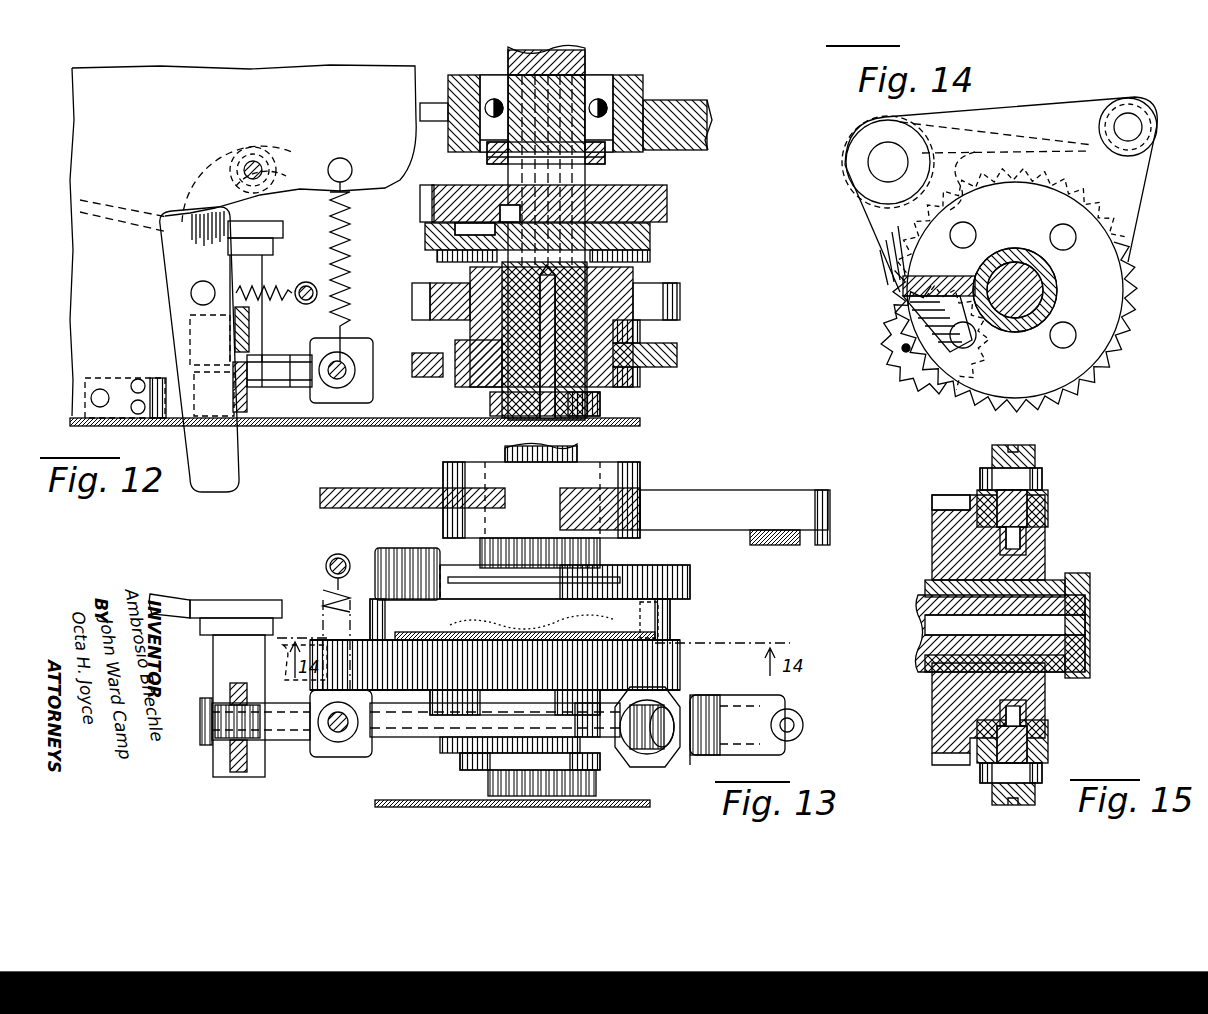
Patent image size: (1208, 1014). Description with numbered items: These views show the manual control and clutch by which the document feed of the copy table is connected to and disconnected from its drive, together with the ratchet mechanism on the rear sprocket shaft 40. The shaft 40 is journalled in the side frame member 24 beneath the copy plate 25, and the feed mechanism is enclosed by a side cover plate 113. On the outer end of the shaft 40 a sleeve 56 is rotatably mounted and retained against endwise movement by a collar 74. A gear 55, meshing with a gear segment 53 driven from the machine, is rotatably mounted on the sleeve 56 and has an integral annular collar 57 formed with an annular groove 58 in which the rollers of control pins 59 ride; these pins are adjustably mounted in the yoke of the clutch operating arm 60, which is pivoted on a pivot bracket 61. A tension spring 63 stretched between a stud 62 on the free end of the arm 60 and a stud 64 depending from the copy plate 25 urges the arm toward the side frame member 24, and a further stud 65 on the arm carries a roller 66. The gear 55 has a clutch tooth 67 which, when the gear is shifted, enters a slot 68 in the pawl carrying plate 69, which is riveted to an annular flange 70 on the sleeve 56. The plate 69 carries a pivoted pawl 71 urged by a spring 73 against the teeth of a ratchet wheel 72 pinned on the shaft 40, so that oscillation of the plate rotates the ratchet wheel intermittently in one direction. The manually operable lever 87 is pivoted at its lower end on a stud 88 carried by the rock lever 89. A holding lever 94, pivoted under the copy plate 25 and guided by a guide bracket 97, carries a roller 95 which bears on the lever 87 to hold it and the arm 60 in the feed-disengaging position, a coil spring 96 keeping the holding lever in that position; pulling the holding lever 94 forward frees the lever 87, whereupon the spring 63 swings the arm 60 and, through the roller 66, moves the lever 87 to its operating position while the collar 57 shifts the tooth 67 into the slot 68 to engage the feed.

In FIG. 12, the side frame member 24 is at (665, 112).
In FIG. 13, the side frame member 24 is at (398, 490).
In FIG. 12, the copy plate 25 is at (246, 75).
In FIG. 12, the sprocket shaft 40 is at (582, 60).
In FIG. 13, the sprocket shaft 40 is at (580, 450).
In FIG. 14, the sprocket shaft 40 is at (1008, 268).
In FIG. 15, the sprocket shaft 40 is at (920, 640).
In FIG. 13, the gear segment 53 is at (285, 654).
In FIG. 12, the gear 55 is at (680, 288).
In FIG. 13, the gear 55 is at (676, 645).
In FIG. 14, the gear 55 is at (922, 370).
In FIG. 15, the gear 55 is at (958, 498).
In FIG. 12, the sleeve 56 is at (588, 272).
In FIG. 13, the sleeve 56 is at (600, 766).
In FIG. 14, the sleeve 56 is at (1058, 290).
In FIG. 15, the sleeve 56 is at (1050, 592).
In FIG. 12, the annular collar 57 is at (630, 340).
In FIG. 13, the annular collar 57 is at (515, 702).
In FIG. 15, the annular collar 57 is at (935, 507).
In FIG. 12, the annular groove 58 is at (624, 374).
In FIG. 13, the annular groove 58 is at (500, 748).
In FIG. 15, the annular groove 58 is at (1040, 550).
In FIG. 13, the control pin 59 is at (683, 726).
In FIG. 15, the control pin 59 is at (1036, 452).
In FIG. 12, the clutch operating arm 60 is at (374, 390).
In FIG. 13, the clutch operating arm 60 is at (810, 692).
In FIG. 13, the pivot bracket 61 is at (702, 757).
In FIG. 12, the stud 62 is at (346, 366).
In FIG. 13, the stud 62 is at (326, 758).
In FIG. 12, the tension spring 63 is at (328, 248).
In FIG. 13, the tension spring 63 is at (330, 592).
In FIG. 12, the stud 64 is at (345, 168).
In FIG. 13, the stud 64 is at (345, 557).
In FIG. 12, the stud 65 is at (279, 384).
In FIG. 13, the stud 65 is at (290, 742).
In FIG. 12, the roller 66 is at (258, 363).
In FIG. 13, the roller 66 is at (236, 683).
In FIG. 14, the clutch tooth 67 is at (934, 278).
In FIG. 14, the slot 68 is at (937, 324).
In FIG. 12, the pawl carrying plate 69 is at (652, 238).
In FIG. 13, the pawl carrying plate 69 is at (520, 619).
In FIG. 14, the pawl carrying plate 69 is at (1090, 110).
In FIG. 12, the annular flange 70 is at (645, 258).
In FIG. 14, the pawl 71 is at (976, 183).
In FIG. 12, the ratchet wheel 72 is at (660, 192).
In FIG. 13, the ratchet wheel 72 is at (610, 575).
In FIG. 14, the ratchet wheel 72 is at (1135, 310).
In FIG. 13, the spring 73 is at (528, 578).
In FIG. 14, the spring 73 is at (1093, 145).
In FIG. 12, the collar 74 is at (490, 404).
In FIG. 13, the collar 74 is at (488, 784).
In FIG. 15, the collar 74 is at (1090, 578).
In FIG. 12, the manually operable lever 87 is at (240, 402).
In FIG. 13, the manually operable lever 87 is at (240, 775).
In FIG. 12, the stud 88 is at (261, 308).
In FIG. 13, the stud 88 is at (215, 656).
In FIG. 12, the rock lever 89 is at (255, 231).
In FIG. 13, the rock lever 89 is at (196, 603).
In FIG. 12, the holding lever 94 is at (199, 349).
In FIG. 12, the roller 95 is at (248, 333).
In FIG. 12, the coil spring 96 is at (288, 290).
In FIG. 12, the guide bracket 97 is at (182, 418).
In FIG. 12, the side cover plate 113 is at (362, 427).
In FIG. 13, the side cover plate 113 is at (398, 802).